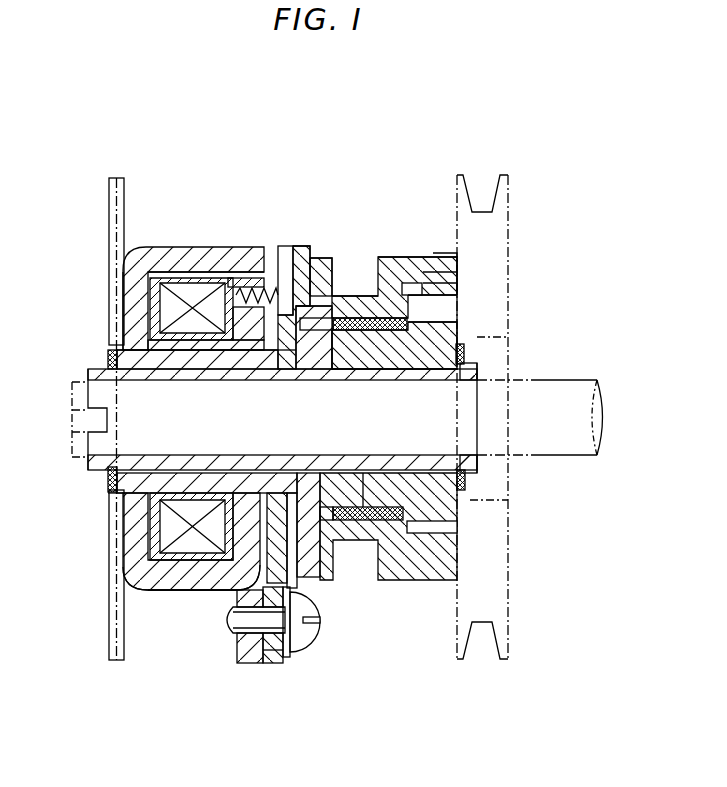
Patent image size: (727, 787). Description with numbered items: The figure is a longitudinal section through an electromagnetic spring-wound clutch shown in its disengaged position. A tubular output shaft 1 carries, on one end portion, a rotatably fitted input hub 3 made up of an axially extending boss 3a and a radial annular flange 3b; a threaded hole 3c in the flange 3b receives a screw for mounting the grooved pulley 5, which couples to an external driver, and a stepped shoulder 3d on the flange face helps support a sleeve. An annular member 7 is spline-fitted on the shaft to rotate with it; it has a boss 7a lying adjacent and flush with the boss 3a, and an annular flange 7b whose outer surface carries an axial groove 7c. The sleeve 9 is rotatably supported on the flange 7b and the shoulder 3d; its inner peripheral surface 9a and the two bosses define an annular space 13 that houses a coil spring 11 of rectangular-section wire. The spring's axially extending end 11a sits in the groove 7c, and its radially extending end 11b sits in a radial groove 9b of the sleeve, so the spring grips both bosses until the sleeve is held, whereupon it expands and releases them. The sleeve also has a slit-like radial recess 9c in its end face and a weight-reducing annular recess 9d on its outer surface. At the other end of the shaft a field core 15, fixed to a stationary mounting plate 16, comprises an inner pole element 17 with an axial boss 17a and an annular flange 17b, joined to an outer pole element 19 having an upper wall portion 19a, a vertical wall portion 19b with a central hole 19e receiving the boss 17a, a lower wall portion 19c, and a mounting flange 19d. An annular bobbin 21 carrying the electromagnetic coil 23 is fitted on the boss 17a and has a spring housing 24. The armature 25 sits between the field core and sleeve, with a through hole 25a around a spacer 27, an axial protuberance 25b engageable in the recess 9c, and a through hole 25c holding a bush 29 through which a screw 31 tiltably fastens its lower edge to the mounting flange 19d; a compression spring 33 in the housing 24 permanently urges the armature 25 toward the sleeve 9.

The output shaft 1 is at (480, 358).
The input hub 3 is at (433, 253).
The boss 3a is at (455, 328).
The annular flange 3b is at (438, 272).
The threaded hole 3c is at (441, 293).
The stepped shoulder 3d is at (438, 283).
The grooved pulley 5 is at (508, 193).
The annular member 7 is at (317, 472).
The boss 7a is at (357, 480).
The annular flange 7b is at (307, 500).
The axial groove 7c is at (311, 345).
The sleeve 9 is at (416, 250).
The inner peripheral surface 9a is at (373, 295).
The radial groove 9b is at (405, 255).
The radial recess 9c is at (327, 247).
The annular recess 9d is at (353, 267).
The coil spring 11 is at (372, 347).
The axially extending end 11a is at (357, 342).
The radially extending end 11b is at (393, 357).
The annular space 13 is at (407, 507).
The field core 15 is at (166, 247).
The stationary mounting plate 16 is at (125, 200).
The inner pole element 17 is at (203, 369).
The axial boss 17a is at (160, 362).
The annular flange 17b is at (250, 342).
The outer pole element 19 is at (123, 523).
The upper wall portion 19a is at (160, 260).
The vertical wall portion 19b is at (135, 305).
The lower wall portion 19c is at (157, 573).
The mounting flange 19d is at (237, 647).
The central hole 19e is at (110, 498).
The annular bobbin 21 is at (203, 582).
The electromagnetic coil 23 is at (200, 545).
The spring housing 24 is at (245, 280).
The armature 25 is at (281, 243).
The through hole 25a is at (288, 356).
The axial protuberance 25b is at (302, 247).
The through hole 25c is at (260, 665).
The spacer 27 is at (275, 495).
The bush 29 is at (284, 603).
The screw 31 is at (307, 643).
The compression spring 33 is at (272, 287).